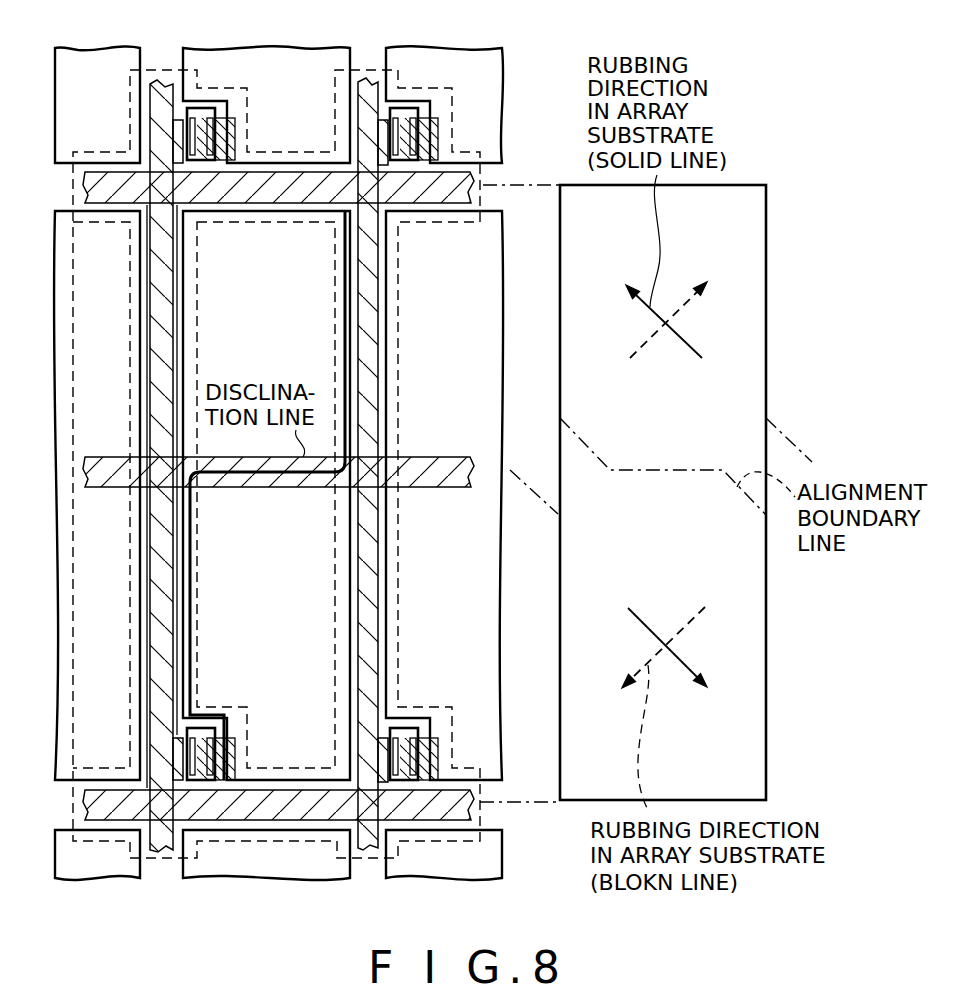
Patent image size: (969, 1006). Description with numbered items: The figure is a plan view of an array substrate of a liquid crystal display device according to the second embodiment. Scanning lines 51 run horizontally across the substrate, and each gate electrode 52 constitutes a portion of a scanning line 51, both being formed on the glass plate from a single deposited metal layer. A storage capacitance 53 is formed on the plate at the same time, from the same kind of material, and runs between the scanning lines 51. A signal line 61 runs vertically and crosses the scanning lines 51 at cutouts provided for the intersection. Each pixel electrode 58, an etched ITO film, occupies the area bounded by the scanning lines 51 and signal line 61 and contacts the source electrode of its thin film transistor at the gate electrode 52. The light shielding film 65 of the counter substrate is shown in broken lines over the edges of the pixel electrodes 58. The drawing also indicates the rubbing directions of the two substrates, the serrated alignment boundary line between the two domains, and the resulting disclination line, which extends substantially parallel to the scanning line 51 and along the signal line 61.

The scanning line 51 is at (462, 180).
The gate electrode 52 is at (208, 728).
The storage capacitance 53 is at (450, 465).
The pixel electrode 58 is at (186, 262).
The signal line 61 is at (163, 90).
The light shielding film 65 is at (198, 300).